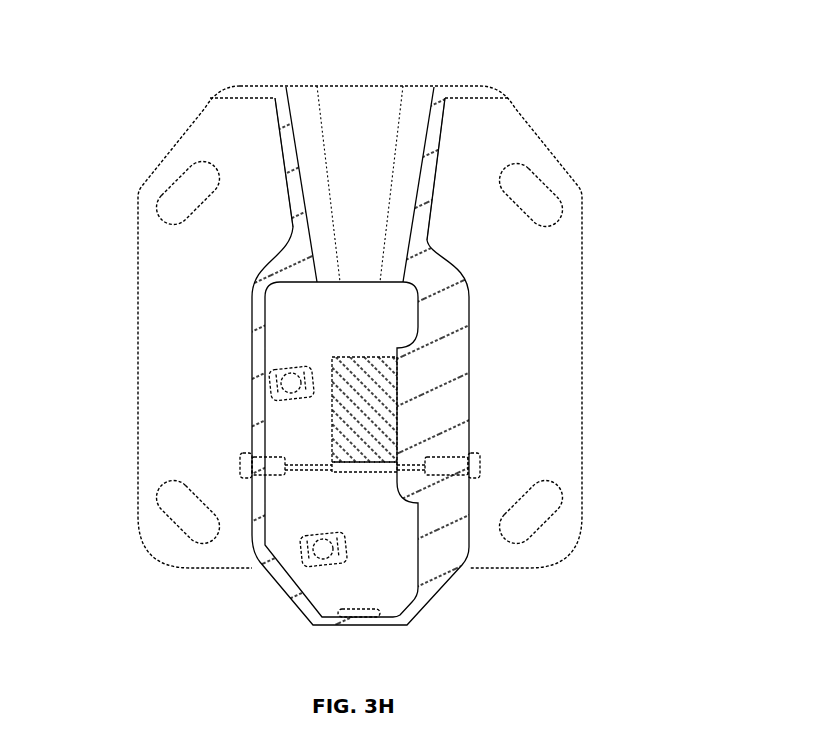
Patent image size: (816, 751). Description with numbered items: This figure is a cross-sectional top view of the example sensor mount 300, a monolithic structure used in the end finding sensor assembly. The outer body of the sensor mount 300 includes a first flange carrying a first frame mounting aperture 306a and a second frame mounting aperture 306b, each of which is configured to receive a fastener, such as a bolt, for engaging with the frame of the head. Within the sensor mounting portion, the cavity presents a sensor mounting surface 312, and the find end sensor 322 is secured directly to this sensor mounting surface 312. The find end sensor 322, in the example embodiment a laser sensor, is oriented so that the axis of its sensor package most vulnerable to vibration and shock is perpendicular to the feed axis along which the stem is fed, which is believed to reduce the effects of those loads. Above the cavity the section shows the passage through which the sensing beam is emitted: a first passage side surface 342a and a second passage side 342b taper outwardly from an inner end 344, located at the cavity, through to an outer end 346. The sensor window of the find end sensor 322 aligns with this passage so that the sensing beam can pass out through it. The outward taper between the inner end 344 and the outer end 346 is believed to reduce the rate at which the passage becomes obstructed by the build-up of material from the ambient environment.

The sensor mount 300 is at (701, 68).
The outer end 346 is at (337, 86).
The first passage side surface 342a is at (423, 165).
The second passage side 342b is at (300, 164).
The first frame mounting aperture 306a is at (563, 201).
The second frame mounting aperture 306b is at (550, 523).
The inner end 344 is at (368, 283).
The sensor mounting surface 312 is at (397, 413).
The find end sensor 322 is at (333, 437).